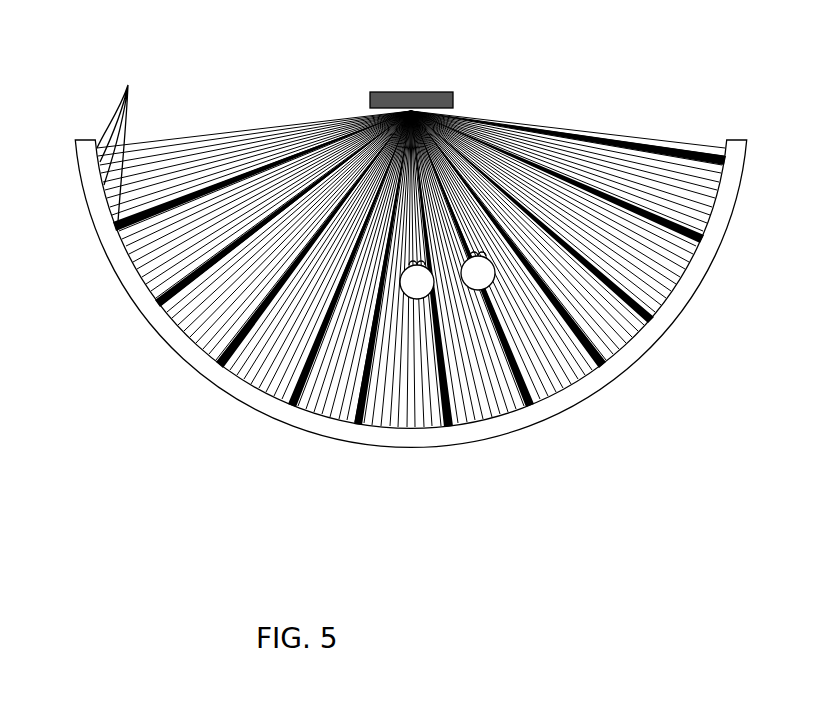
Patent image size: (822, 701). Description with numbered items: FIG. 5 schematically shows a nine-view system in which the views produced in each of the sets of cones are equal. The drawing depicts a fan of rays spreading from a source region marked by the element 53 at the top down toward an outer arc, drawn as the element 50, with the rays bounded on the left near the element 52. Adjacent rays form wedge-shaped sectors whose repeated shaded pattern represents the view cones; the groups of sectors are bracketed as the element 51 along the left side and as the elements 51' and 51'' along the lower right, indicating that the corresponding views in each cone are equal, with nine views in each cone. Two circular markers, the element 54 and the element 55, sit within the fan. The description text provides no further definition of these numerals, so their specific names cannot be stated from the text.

The reflector ring 50 is at (692, 308).
The light guide segments 51 is at (368, 269).
The first segment group 51' is at (477, 309).
The second segment group 51'' is at (516, 298).
The light rays 52 is at (119, 141).
The light source 53 is at (435, 92).
The first detector 54 is at (410, 287).
The second detector 55 is at (486, 278).